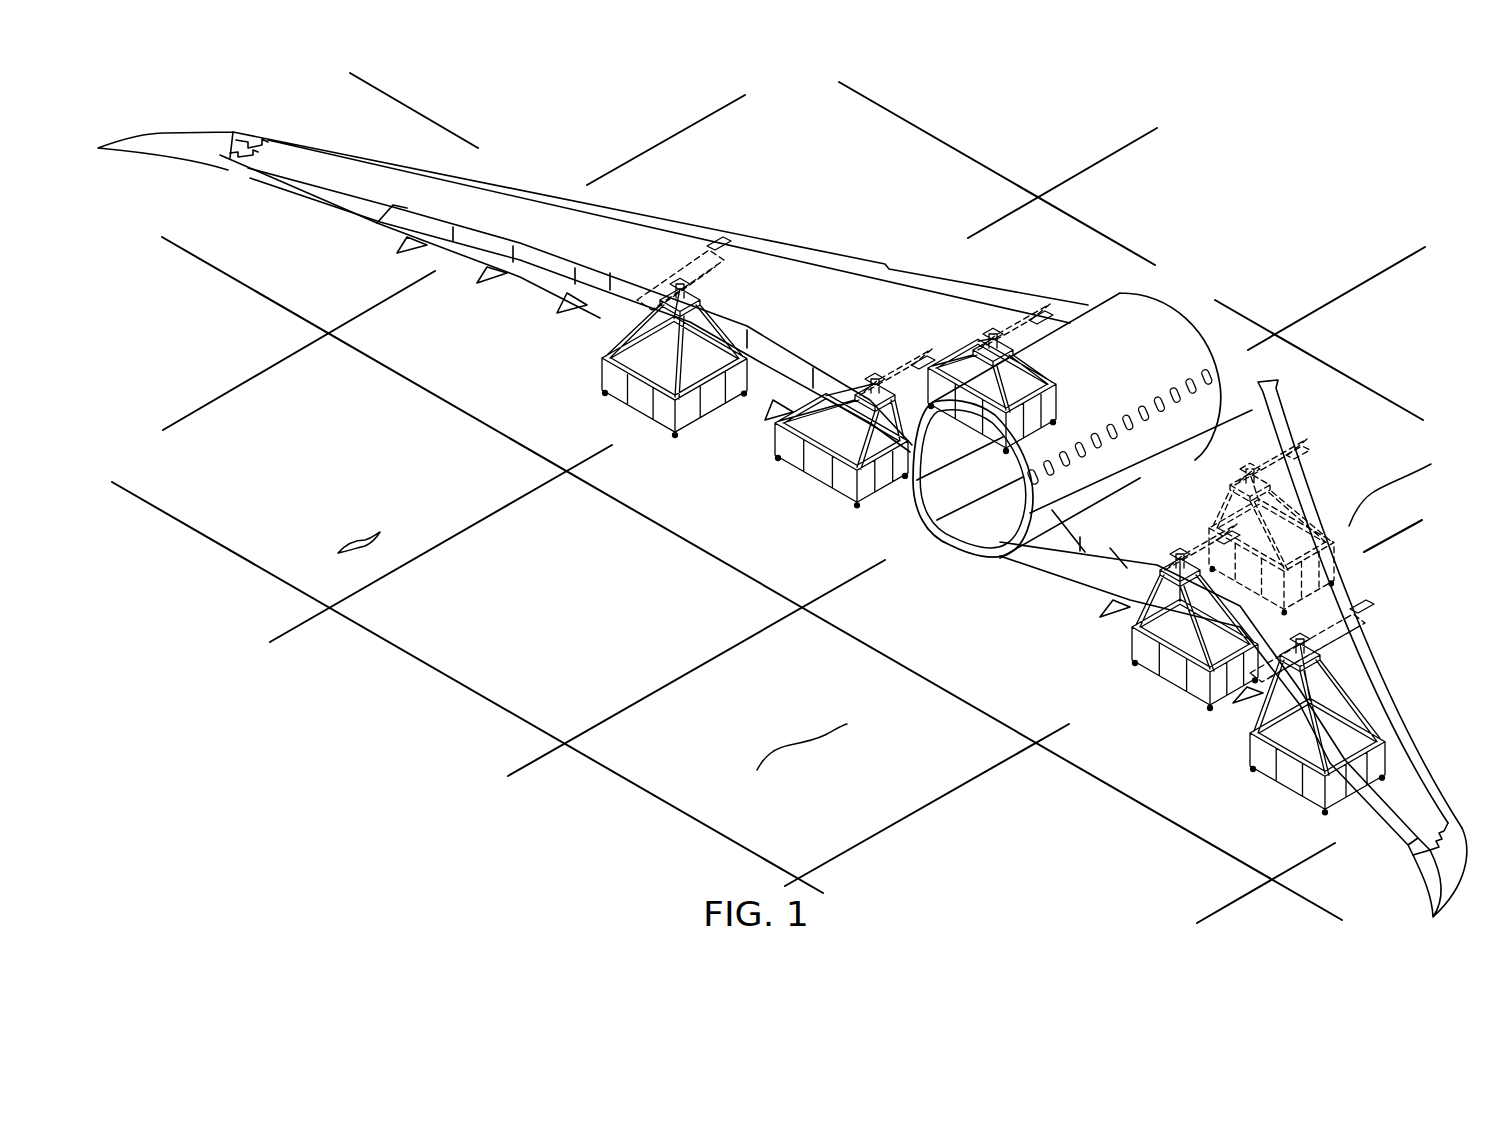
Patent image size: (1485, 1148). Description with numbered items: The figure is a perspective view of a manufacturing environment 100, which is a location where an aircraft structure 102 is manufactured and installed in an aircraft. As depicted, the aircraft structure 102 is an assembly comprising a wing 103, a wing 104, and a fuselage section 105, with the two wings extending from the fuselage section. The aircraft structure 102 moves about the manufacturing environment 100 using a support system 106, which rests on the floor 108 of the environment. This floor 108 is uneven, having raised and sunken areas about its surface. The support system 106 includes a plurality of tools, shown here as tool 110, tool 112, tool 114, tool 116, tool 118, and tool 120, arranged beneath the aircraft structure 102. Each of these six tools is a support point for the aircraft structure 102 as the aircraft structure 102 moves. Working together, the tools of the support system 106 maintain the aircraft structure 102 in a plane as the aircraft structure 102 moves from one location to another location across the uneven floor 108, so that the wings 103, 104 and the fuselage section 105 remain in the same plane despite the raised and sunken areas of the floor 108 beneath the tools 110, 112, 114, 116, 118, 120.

The manufacturing environment 100 is at (1262, 166).
The aircraft structure 102 is at (868, 251).
The wing 103 is at (1364, 664).
The wing 104 is at (755, 255).
The fuselage section 105 is at (1170, 305).
The support system 106 is at (530, 366).
The floor 108 is at (544, 622).
The tool 110 is at (634, 419).
The tool 112 is at (810, 480).
The tool 114 is at (924, 378).
The tool 116 is at (1200, 538).
The tool 118 is at (1167, 686).
The tool 120 is at (1283, 792).